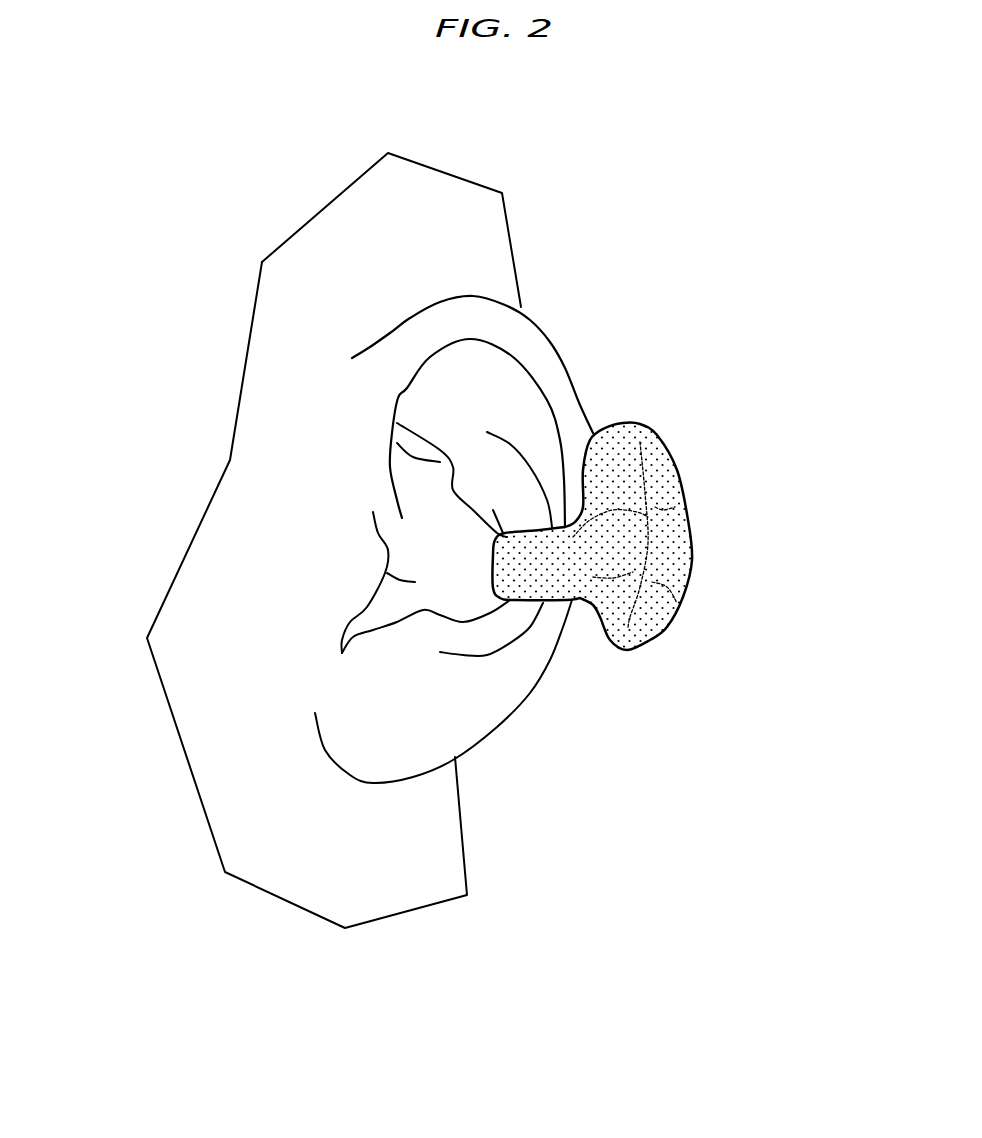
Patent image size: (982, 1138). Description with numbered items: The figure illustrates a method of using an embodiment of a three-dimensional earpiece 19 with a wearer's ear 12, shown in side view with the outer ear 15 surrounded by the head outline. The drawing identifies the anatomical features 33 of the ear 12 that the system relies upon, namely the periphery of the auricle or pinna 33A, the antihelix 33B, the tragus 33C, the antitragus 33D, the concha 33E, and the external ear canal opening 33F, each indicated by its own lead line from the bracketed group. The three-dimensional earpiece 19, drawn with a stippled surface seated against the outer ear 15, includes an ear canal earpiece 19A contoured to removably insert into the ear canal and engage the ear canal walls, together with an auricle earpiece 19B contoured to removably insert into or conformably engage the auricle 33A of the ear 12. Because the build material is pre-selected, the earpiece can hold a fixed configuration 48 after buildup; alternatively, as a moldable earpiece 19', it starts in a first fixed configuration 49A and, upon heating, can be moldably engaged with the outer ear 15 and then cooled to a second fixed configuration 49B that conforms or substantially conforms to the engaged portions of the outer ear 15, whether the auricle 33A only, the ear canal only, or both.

The ear 12 is at (548, 322).
The outer ear 15 is at (430, 597).
The three-dimensional earpiece 19 is at (667, 579).
The moldable earpiece 19' is at (667, 579).
The ear canal earpiece 19A is at (537, 585).
The auricle earpiece 19B is at (663, 617).
The fixed configuration 48 is at (704, 536).
The first fixed configuration 49A is at (651, 535).
The second fixed configuration 49B is at (610, 544).
The anatomical features 33 is at (73, 303).
The auricle 33A is at (437, 387).
The antihelix 33B is at (397, 423).
The tragus 33C is at (367, 543).
The antitragus 33D is at (365, 632).
The concha 33E is at (400, 558).
The external ear canal opening 33F is at (418, 630).